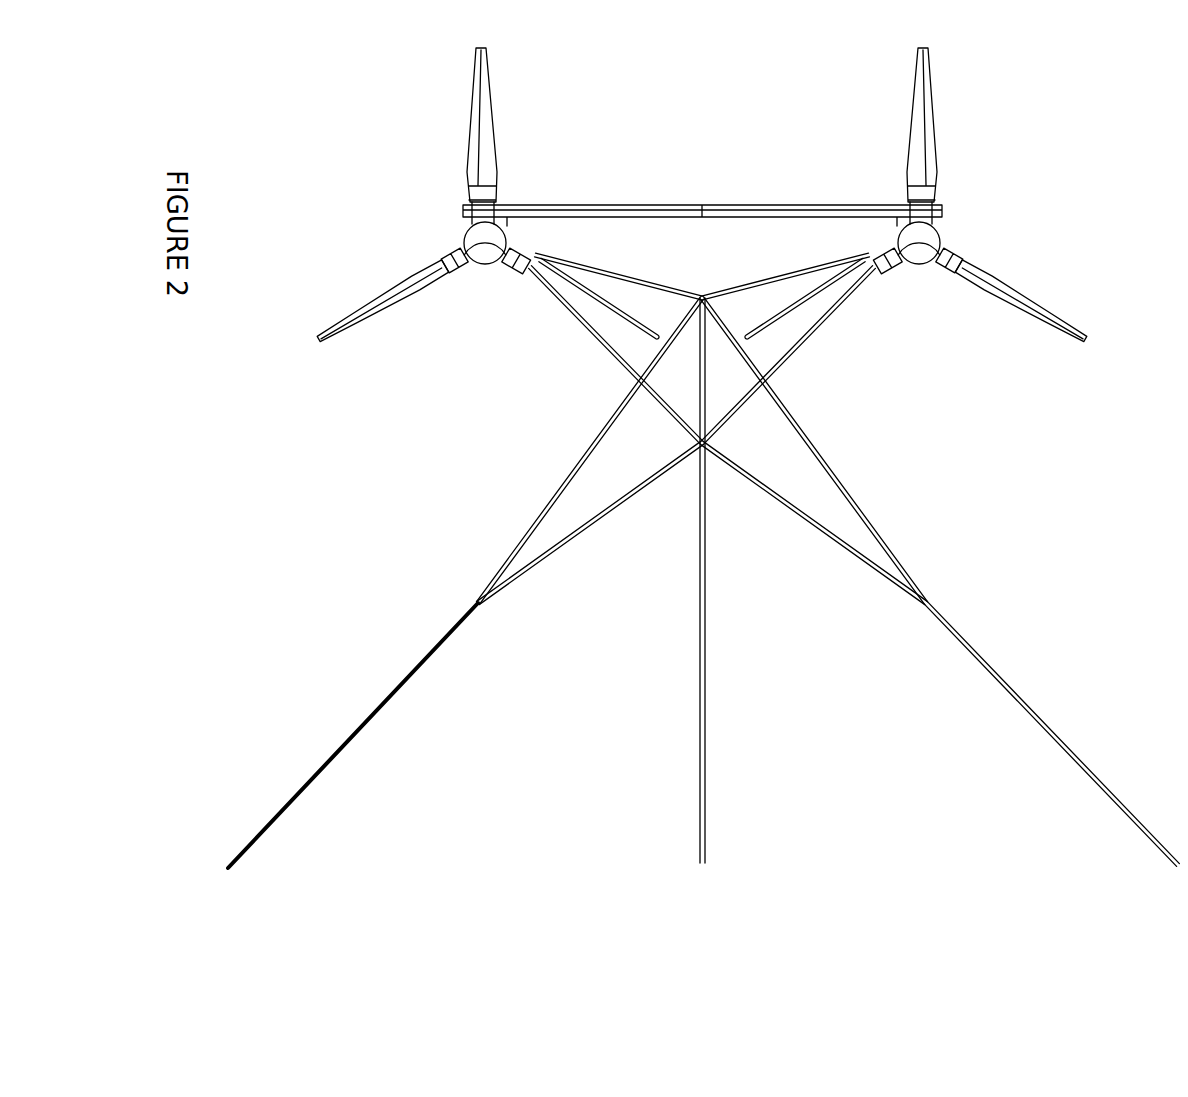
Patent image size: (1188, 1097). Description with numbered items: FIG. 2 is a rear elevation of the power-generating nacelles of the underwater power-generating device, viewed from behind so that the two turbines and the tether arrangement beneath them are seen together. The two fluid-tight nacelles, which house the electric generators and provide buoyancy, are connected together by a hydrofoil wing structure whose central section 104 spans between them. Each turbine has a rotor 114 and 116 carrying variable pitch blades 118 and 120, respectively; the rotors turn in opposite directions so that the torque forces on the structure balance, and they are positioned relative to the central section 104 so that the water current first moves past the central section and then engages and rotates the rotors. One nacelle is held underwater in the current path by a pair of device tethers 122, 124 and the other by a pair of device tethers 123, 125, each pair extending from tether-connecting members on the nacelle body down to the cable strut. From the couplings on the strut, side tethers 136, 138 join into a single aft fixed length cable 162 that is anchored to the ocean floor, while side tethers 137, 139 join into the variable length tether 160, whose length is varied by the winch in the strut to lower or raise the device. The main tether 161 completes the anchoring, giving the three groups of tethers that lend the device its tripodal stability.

The central section 104 is at (743, 205).
The rotor 114 is at (928, 233).
The rotor 116 is at (482, 250).
The variable pitch blades 118 is at (919, 92).
The variable pitch blades 120 is at (484, 78).
The device tether 122 is at (588, 330).
The device tether 123 is at (828, 318).
The device tether 124 is at (652, 283).
The device tether 125 is at (737, 287).
The side tether 136 is at (812, 444).
The side tether 137 is at (577, 472).
The side tether 138 is at (838, 538).
The side tether 139 is at (588, 523).
The variable length tether 160 is at (390, 700).
The main tether 161 is at (706, 670).
The aft fixed length cable 162 is at (997, 678).